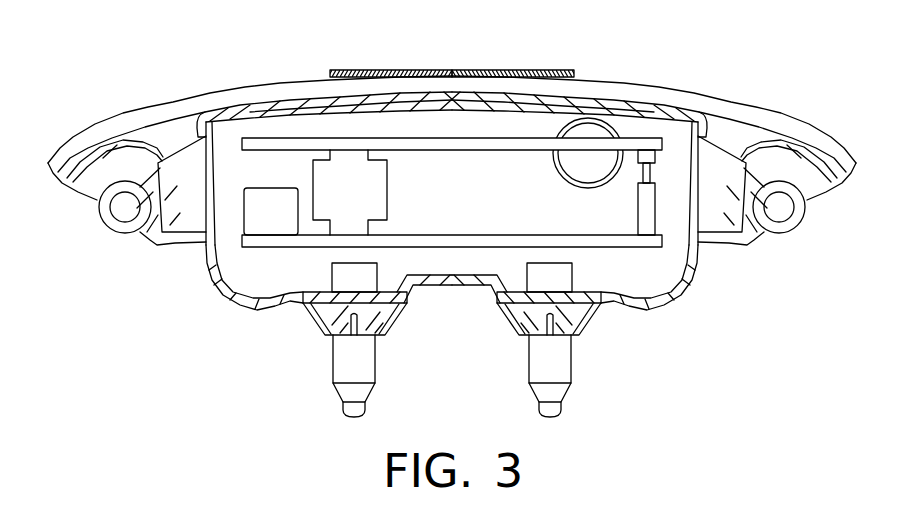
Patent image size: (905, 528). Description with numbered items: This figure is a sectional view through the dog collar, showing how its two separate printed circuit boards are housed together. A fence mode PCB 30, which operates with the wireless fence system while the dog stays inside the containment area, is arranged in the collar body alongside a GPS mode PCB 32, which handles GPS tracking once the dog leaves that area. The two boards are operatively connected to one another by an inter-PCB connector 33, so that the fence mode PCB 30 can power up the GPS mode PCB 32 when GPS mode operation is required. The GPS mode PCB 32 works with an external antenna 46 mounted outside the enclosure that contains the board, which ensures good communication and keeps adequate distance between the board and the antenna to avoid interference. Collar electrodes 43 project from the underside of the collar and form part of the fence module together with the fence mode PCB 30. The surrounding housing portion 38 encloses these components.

The fence mode PCB 30 is at (487, 234).
The GPS mode PCB 32 is at (295, 136).
The inter-PCB connector 33 is at (638, 200).
The housing 38 is at (215, 302).
The collar electrodes 43 is at (337, 408).
The external antenna 46 is at (590, 117).